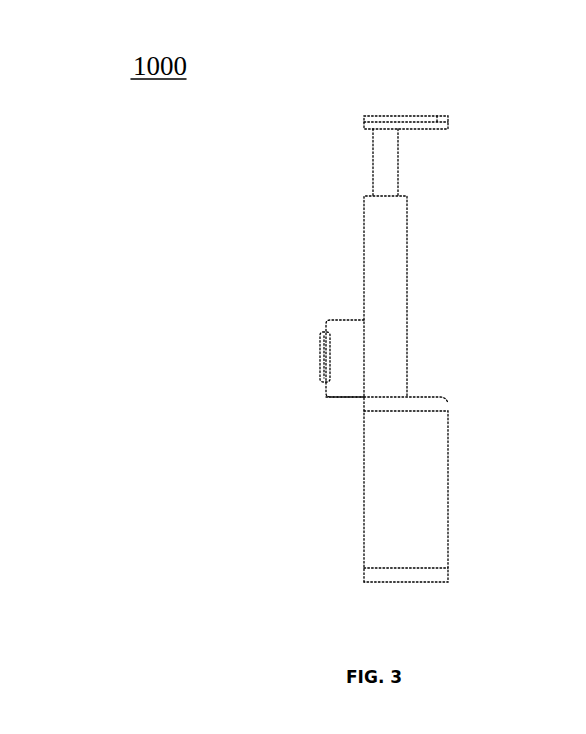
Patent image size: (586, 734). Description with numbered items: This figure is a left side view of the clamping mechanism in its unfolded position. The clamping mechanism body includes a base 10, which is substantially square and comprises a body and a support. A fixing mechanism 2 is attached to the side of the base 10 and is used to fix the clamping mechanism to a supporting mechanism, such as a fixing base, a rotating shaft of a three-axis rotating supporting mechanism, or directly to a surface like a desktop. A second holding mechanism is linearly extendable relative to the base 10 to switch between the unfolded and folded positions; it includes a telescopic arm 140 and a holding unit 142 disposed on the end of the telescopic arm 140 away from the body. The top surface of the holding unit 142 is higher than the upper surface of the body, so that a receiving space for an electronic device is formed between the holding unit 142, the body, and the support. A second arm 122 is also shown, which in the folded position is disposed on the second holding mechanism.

The telescopic arm 140 is at (426, 113).
The holding unit 142 is at (380, 170).
The base 10 is at (380, 248).
The second arm 122 is at (386, 523).
The fixing mechanism 2 is at (345, 330).